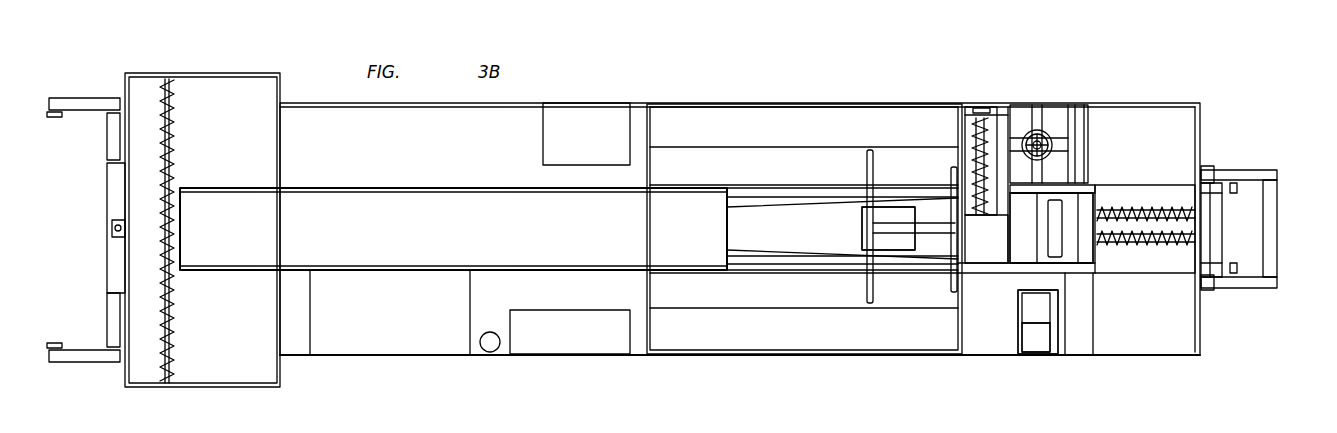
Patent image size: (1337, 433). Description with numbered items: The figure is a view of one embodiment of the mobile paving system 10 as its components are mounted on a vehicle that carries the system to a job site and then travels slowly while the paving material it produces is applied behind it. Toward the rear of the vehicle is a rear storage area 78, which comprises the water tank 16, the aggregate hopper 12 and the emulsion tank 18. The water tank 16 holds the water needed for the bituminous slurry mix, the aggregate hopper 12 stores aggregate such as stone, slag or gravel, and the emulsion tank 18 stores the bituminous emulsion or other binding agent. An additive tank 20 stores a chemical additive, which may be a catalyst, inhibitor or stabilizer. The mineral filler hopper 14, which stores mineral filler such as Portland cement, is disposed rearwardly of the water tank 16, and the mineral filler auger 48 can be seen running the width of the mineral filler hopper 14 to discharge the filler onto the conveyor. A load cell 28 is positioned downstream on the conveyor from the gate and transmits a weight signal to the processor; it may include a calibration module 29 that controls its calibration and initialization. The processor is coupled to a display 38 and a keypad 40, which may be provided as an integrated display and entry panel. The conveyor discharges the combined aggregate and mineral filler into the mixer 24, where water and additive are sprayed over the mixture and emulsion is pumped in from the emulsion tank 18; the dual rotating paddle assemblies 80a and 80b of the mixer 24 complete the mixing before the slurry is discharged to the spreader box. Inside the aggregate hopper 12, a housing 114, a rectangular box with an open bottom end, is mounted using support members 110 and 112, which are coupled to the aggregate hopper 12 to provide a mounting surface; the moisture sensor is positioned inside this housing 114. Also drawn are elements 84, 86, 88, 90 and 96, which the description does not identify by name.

The paving system 10 is at (1238, 63).
The aggregate hopper 12 is at (804, 230).
The mineral filler hopper 14 is at (968, 138).
The water tank 16 is at (804, 229).
The emulsion tank 18 is at (804, 323).
The additive tank 20 is at (1052, 112).
The mixer 24 is at (1105, 188).
The load cell 28 is at (1050, 247).
The calibration module 29 is at (1042, 345).
The display 38 is at (1030, 305).
The keypad 40 is at (1038, 322).
The auger 48 is at (988, 108).
The rear storage area 78 is at (858, 355).
The rotating paddle assembly 80a is at (1157, 245).
The rotating paddle assembly 80b is at (1142, 208).
The mounting bracket 84 is at (52, 118).
The end housing 86 is at (202, 230).
The vertical lead screw 88 is at (173, 317).
The beam 90 is at (453, 229).
The carriage 96 is at (1083, 255).
The support member 110 is at (867, 170).
The support member 112 is at (880, 230).
The housing 114 is at (902, 215).